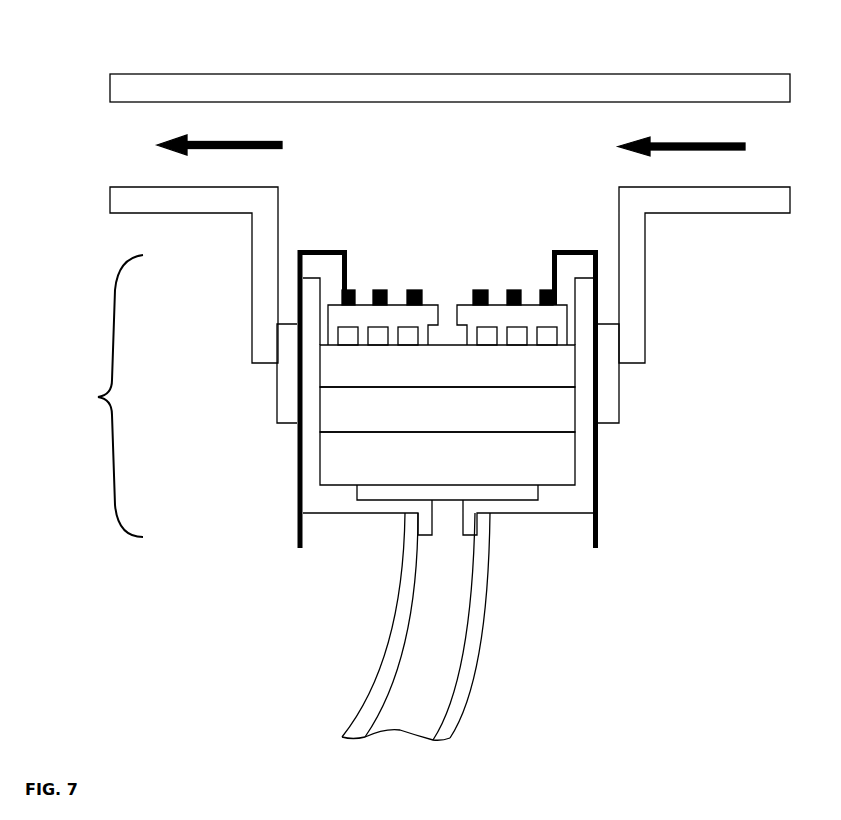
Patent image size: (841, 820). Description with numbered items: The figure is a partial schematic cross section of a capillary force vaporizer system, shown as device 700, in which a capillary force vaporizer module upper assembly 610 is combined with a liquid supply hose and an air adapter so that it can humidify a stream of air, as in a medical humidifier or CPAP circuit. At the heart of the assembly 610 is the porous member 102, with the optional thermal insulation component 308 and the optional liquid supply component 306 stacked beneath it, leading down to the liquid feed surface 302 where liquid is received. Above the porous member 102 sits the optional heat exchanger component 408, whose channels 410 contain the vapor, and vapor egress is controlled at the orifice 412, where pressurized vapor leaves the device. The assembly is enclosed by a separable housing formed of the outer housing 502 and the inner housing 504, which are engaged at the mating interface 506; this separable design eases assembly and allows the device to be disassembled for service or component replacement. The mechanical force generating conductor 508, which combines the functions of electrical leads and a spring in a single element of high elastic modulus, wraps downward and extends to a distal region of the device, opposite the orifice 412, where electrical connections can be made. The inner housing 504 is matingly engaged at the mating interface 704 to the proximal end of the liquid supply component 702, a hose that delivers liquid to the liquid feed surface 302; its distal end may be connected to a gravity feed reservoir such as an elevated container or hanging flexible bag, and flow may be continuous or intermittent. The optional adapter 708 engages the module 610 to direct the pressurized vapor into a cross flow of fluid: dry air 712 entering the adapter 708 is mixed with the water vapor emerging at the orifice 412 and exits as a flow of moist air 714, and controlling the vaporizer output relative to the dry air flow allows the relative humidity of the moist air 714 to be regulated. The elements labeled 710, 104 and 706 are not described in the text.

The device 700 is at (107, 29).
The flow of moist air 714 is at (224, 139).
The dry air 712 is at (692, 140).
The adapter 708 is at (135, 88).
The left spacer 710 is at (280, 341).
The outer housing 502 is at (606, 349).
The upper assembly 610 is at (100, 396).
The mechanical force generating conductor 508 is at (297, 523).
The mating interface 506 is at (599, 402).
The heat exchanger component 408 is at (546, 318).
The orifice 412 is at (448, 309).
The contact pads 104 is at (513, 308).
The channels 410 is at (487, 336).
The porous member 102 is at (347, 362).
The thermal insulation component 308 is at (347, 400).
The liquid supply component 306 is at (347, 443).
The inner housing 504 is at (578, 497).
The liquid feed surface 302 is at (476, 488).
The liquid supply component 702 is at (469, 663).
The mating interface 704 is at (417, 520).
The cable web 706 is at (423, 698).